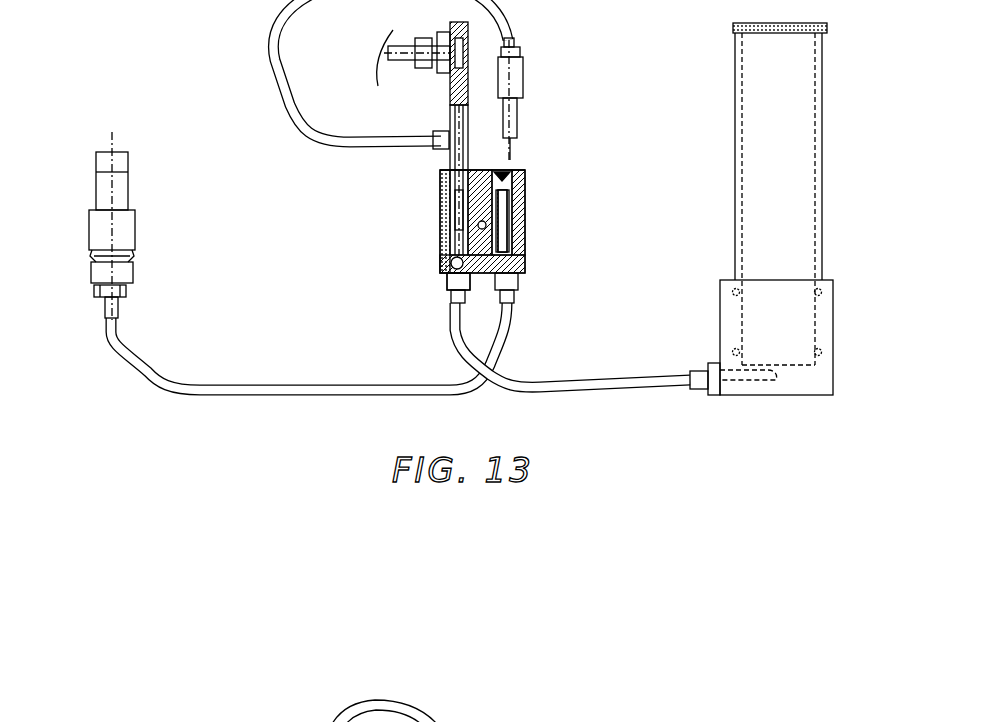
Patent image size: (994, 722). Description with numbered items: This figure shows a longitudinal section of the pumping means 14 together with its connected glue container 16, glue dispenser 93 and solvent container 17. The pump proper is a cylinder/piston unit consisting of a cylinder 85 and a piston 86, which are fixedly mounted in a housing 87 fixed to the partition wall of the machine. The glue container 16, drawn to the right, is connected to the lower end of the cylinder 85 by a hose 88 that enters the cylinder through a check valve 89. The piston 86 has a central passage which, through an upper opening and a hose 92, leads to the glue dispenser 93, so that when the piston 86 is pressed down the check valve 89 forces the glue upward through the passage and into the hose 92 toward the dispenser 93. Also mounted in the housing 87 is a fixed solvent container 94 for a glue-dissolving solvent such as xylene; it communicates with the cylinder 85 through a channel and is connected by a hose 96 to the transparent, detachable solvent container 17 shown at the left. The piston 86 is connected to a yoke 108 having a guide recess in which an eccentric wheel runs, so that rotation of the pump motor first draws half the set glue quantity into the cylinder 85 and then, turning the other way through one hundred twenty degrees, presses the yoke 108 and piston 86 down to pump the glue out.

The pumping means 14 is at (440, 233).
The glue container 16 is at (800, 183).
The solvent container 17 is at (125, 197).
The cylinder 85 is at (443, 262).
The piston 86 is at (443, 207).
The housing 87 is at (523, 173).
The hose 88 is at (580, 388).
The check valve 89 is at (443, 290).
The hose 92 is at (268, 38).
The glue dispenser 93 is at (518, 78).
The solvent container 94 is at (528, 231).
The hose 96 is at (278, 388).
The yoke 108 is at (448, 97).